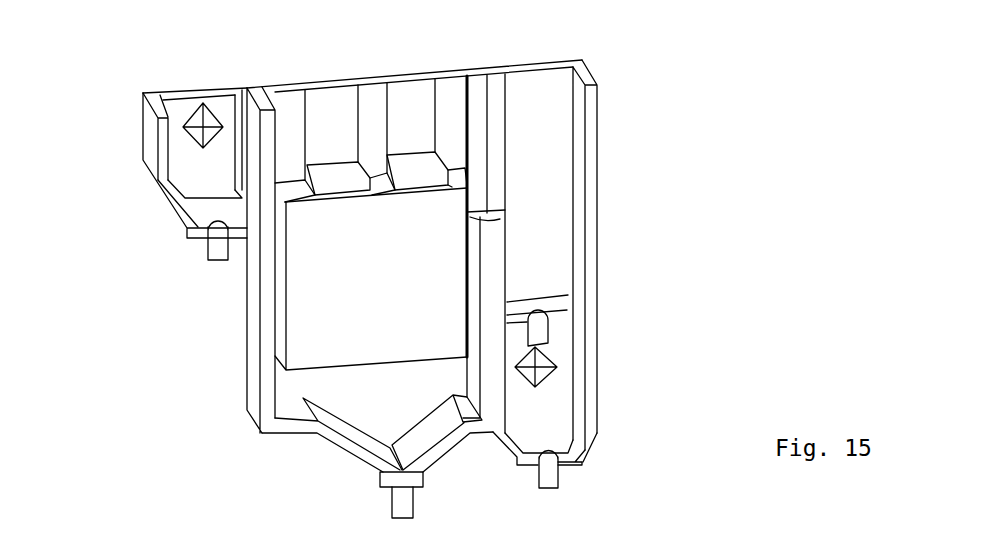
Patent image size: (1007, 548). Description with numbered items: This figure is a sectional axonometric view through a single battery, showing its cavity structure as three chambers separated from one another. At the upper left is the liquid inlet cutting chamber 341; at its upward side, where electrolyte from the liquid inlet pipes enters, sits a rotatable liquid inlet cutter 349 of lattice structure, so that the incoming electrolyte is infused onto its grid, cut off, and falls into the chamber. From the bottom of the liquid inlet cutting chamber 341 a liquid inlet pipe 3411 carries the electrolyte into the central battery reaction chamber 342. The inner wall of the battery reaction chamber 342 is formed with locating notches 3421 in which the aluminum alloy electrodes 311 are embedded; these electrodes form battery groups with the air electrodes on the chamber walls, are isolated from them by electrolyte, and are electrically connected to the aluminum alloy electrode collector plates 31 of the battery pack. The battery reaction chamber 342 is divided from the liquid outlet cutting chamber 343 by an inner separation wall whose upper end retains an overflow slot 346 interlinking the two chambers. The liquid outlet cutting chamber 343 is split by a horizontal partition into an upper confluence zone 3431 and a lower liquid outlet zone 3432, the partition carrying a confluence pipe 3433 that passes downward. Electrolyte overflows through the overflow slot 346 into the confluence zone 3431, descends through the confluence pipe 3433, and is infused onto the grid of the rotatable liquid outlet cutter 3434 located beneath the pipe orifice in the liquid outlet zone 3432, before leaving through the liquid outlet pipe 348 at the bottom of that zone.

The aluminum alloy electrode collector plate 31 is at (243, 193).
The aluminum alloy electrode 311 is at (335, 304).
The liquid inlet cutting chamber 341 is at (175, 147).
The liquid inlet pipe 3411 is at (392, 518).
The battery reaction chamber 342 is at (382, 397).
The locating notch 3421 is at (405, 135).
The liquid outlet cutting chamber 343 is at (654, 255).
The confluence zone 3431 is at (545, 100).
The liquid outlet zone 3432 is at (557, 407).
The confluence pipe 3433 is at (542, 330).
The liquid outlet cutter 3434 is at (550, 355).
The overflow slot 346 is at (488, 212).
The liquid outlet pipe 348 is at (621, 474).
The liquid inlet cutter 349 is at (180, 123).